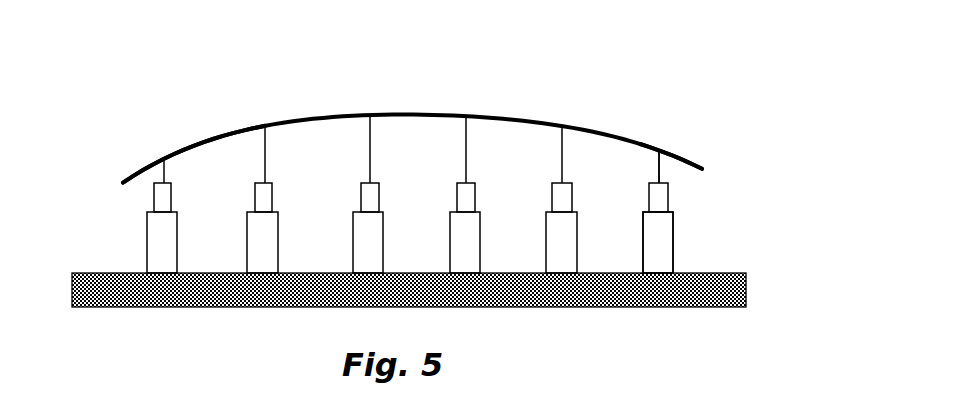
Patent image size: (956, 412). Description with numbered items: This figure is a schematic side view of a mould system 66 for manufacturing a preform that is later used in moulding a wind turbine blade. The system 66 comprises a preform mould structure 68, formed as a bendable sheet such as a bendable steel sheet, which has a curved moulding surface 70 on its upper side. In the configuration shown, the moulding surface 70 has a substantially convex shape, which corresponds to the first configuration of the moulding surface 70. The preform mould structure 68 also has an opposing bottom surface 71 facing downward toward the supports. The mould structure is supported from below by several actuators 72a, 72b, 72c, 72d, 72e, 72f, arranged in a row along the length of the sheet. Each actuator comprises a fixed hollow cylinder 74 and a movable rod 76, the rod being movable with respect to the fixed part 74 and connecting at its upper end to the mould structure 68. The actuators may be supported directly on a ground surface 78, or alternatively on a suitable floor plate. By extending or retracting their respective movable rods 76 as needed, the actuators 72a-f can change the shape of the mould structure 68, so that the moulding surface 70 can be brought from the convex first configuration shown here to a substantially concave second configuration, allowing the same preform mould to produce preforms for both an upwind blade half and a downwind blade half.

The mould system 66 is at (480, 74).
The preform mould structure 68 is at (702, 167).
The moulding surface 70 is at (535, 120).
The bottom surface 71 is at (222, 137).
The actuator 72a is at (145, 218).
The actuator 72b is at (278, 222).
The actuator 72c is at (385, 217).
The actuator 72d is at (480, 227).
The actuator 72e is at (572, 227).
The actuator 72f is at (672, 218).
The fixed hollow cylinder 74 is at (659, 249).
The movable rod 76 is at (663, 171).
The ground surface 78 is at (729, 290).